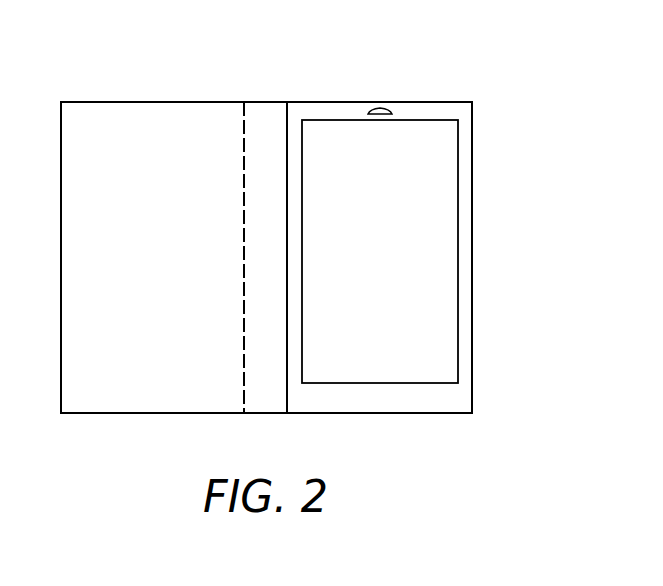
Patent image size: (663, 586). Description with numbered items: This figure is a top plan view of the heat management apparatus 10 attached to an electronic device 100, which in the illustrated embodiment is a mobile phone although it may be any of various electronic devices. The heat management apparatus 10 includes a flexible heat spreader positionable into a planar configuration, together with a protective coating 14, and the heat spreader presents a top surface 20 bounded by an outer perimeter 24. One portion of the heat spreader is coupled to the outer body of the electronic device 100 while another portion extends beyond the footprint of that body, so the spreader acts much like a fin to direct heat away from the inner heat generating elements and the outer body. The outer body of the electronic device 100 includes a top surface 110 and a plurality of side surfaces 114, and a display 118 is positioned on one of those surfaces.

The heat management apparatus 10 is at (107, 86).
The protective coating 14 is at (70, 323).
The top surface 20 is at (70, 203).
The outer perimeter 24 is at (190, 101).
The electronic device 100 is at (407, 86).
The top surface 110 is at (457, 108).
The side surfaces 114 is at (473, 258).
The display 118 is at (450, 160).